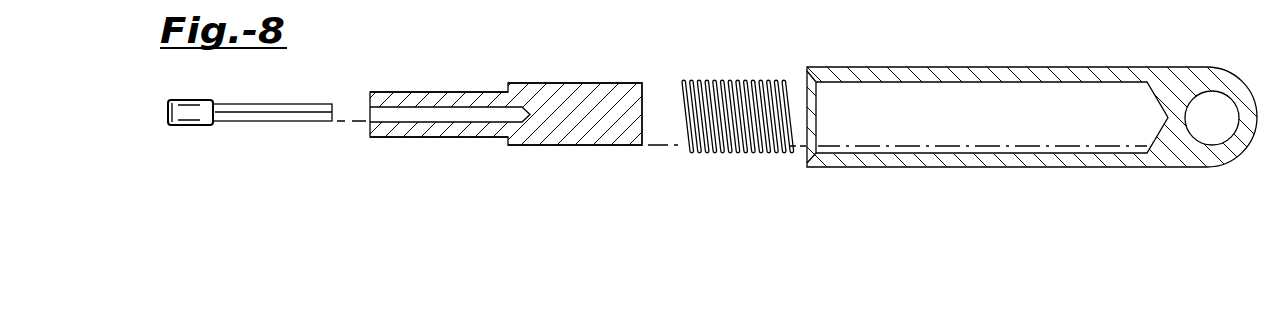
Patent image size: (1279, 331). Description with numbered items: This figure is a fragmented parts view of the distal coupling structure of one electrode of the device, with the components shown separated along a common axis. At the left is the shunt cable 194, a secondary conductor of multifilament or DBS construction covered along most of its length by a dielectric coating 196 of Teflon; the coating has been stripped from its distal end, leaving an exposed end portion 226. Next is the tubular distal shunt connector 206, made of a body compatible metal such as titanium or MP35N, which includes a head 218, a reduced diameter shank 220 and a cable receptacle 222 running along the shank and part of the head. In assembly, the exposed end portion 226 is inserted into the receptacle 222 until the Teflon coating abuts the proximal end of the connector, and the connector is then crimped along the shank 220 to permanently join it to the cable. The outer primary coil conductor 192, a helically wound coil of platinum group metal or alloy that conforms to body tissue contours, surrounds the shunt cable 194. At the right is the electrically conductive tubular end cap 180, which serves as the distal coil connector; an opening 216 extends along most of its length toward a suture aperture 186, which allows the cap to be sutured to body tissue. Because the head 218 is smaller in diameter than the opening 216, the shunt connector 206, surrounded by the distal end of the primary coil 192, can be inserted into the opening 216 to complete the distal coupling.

The end cap 180 is at (989, 125).
The aperture 186 is at (1212, 128).
The primary coil conductor 192 is at (718, 82).
The shunt cable 194 is at (236, 108).
The dielectric coating 196 is at (180, 125).
The distal shunt connector 206 is at (506, 96).
The opening 216 is at (927, 83).
The head 218 is at (613, 85).
The shank 220 is at (380, 137).
The cable receptacle 222 is at (447, 115).
The exposed end portion 226 is at (307, 103).